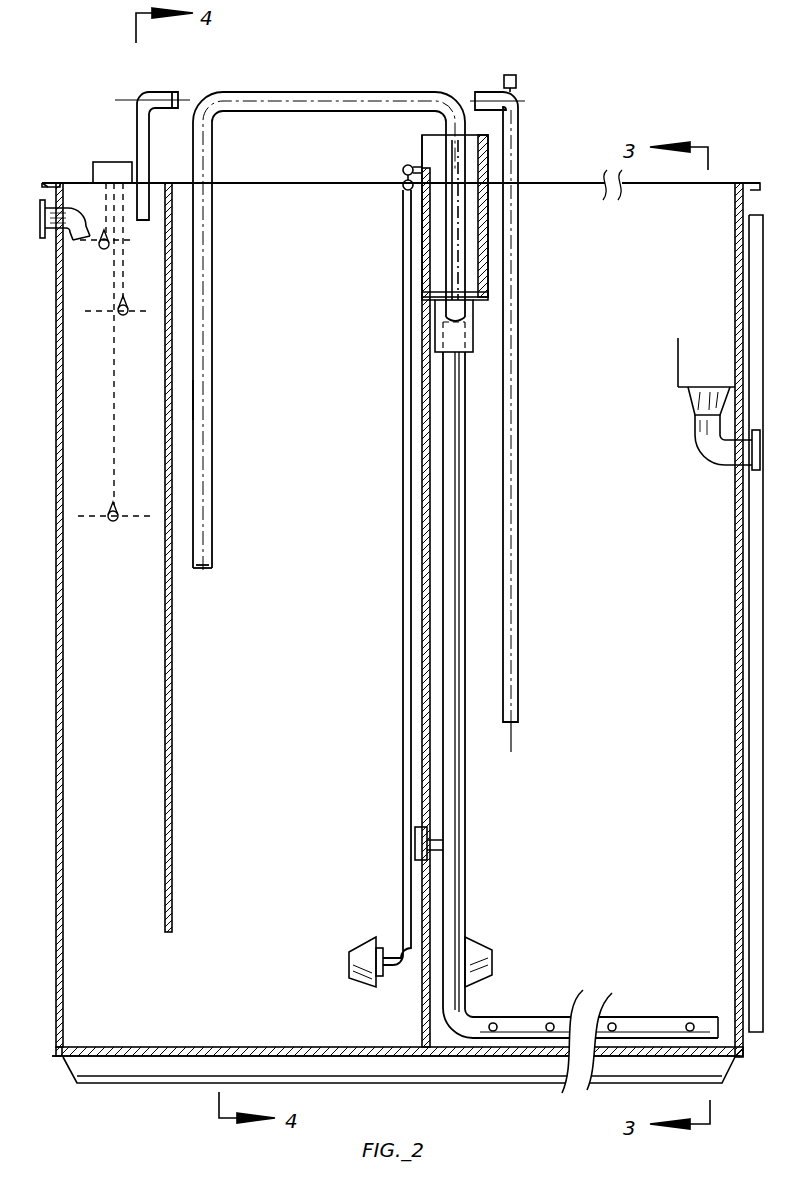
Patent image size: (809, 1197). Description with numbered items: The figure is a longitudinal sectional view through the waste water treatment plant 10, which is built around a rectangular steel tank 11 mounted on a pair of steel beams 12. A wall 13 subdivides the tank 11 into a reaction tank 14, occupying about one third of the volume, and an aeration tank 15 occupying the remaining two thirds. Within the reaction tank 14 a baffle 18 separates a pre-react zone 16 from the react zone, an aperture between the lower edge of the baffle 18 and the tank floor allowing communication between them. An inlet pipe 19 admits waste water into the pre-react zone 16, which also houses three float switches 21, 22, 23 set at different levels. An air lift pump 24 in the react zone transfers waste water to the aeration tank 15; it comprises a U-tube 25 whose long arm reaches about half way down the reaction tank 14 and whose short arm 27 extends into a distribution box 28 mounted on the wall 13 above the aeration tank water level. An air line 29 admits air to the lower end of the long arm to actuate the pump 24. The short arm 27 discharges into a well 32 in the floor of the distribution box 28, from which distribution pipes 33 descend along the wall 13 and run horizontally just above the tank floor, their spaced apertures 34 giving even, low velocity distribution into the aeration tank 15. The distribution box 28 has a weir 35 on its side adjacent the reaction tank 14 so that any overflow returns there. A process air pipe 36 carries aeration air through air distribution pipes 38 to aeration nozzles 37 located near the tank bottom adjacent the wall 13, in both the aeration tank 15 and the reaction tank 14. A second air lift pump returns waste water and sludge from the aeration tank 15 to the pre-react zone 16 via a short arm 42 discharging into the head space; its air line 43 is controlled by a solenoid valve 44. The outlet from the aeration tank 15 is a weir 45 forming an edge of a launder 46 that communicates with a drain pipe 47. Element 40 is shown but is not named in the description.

The waste water treatment plant 10 is at (391, 62).
The tank 11 is at (735, 600).
The steel beams 12 is at (130, 1068).
The wall 13 is at (421, 1005).
The reaction tank 14 is at (232, 701).
The aeration tank 15 is at (580, 701).
The pre-react zone 16 is at (97, 701).
The baffle 18 is at (173, 808).
The inlet pipe 19 is at (74, 236).
The float switch 21 is at (110, 247).
The float switch 22 is at (122, 316).
The float switch 23 is at (115, 522).
The air lift pump 24 is at (284, 86).
The U-tube 25 is at (229, 95).
The short arm 27 is at (460, 226).
The distribution box 28 is at (488, 150).
The air line 29 is at (210, 397).
The well 32 is at (473, 322).
The distribution pipes 33 is at (460, 880).
The apertures 34 is at (493, 1023).
The weir 35 is at (426, 165).
The process air pipe 36 is at (403, 170).
The aeration nozzles 37 is at (349, 962).
The air distribution pipes 38 is at (403, 826).
The vent outlet 40 is at (154, 91).
The short arm 42 is at (137, 146).
The air line 43 is at (515, 350).
The solenoid valve 44 is at (514, 76).
The weir 45 is at (678, 342).
The launder 46 is at (680, 386).
The drain pipe 47 is at (706, 448).